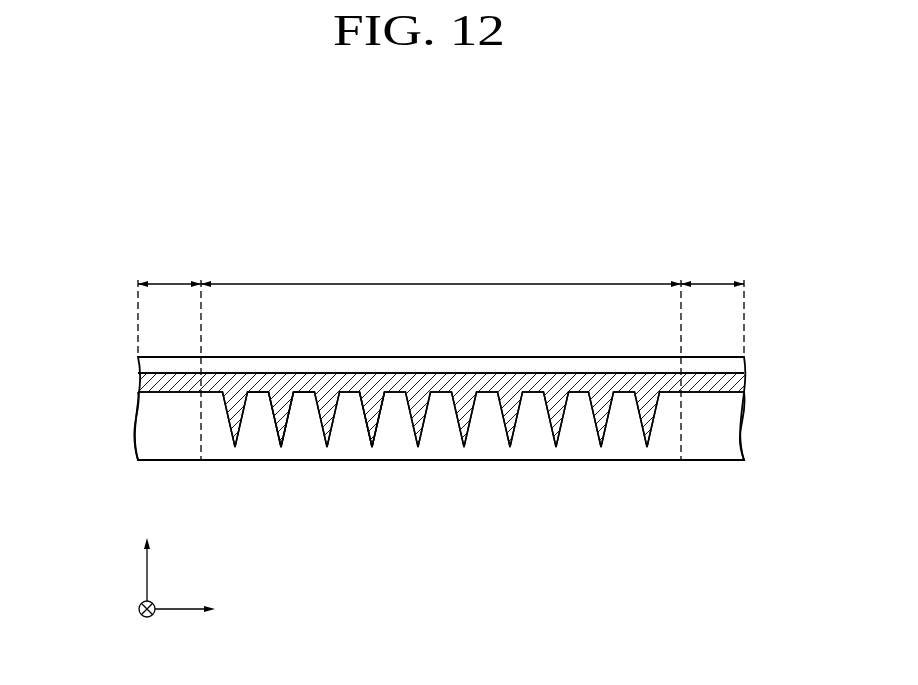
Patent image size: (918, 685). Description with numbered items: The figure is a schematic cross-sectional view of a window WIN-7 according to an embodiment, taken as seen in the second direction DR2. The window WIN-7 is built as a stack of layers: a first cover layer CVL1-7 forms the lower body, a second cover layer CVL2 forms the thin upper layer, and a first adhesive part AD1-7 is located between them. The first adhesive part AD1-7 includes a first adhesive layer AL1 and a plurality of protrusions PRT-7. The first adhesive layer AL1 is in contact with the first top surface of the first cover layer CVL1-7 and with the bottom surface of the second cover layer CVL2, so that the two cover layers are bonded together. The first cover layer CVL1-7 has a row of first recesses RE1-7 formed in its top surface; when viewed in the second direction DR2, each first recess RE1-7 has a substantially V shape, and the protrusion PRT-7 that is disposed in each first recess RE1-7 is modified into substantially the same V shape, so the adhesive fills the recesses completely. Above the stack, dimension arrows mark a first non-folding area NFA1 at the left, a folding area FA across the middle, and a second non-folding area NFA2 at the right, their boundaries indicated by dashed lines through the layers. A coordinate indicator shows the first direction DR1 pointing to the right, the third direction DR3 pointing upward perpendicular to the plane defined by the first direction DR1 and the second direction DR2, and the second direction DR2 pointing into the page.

The window WIN-7 is at (650, 208).
The second cover layer CVL2 is at (730, 366).
The first adhesive part AD1-7 is at (730, 383).
The first adhesive layer AL1 is at (157, 382).
The first cover layer CVL1-7 is at (730, 423).
The protrusion PRT-7 is at (278, 418).
The first recess RE1-7 is at (368, 420).
The first non-folding area NFA1 is at (169, 356).
The folding area FA is at (441, 270).
The second non-folding area NFA2 is at (712, 356).
The first direction DR1 is at (207, 610).
The second direction DR2 is at (151, 624).
The third direction DR3 is at (151, 557).